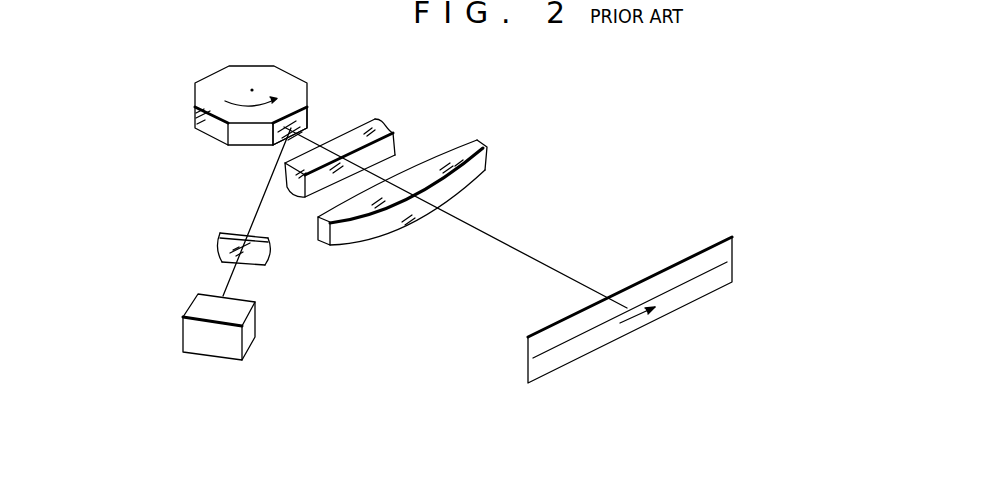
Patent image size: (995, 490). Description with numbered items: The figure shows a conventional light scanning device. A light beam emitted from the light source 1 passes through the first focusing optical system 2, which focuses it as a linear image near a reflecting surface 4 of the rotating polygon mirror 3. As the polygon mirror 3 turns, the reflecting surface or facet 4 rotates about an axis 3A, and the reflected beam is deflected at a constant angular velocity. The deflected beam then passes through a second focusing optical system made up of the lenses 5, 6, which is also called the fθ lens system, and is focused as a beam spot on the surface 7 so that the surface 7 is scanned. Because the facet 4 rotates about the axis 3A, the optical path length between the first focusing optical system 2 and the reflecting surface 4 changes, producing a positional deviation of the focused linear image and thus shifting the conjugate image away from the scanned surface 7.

The light source 1 is at (203, 307).
The first focusing optical system 2 is at (228, 231).
The rotating polygon mirror 3 is at (247, 90).
The axis 3A is at (252, 89).
The reflecting surface 4 is at (285, 130).
The lens 5 is at (387, 121).
The lens 6 is at (483, 142).
The surface 7 is at (695, 263).